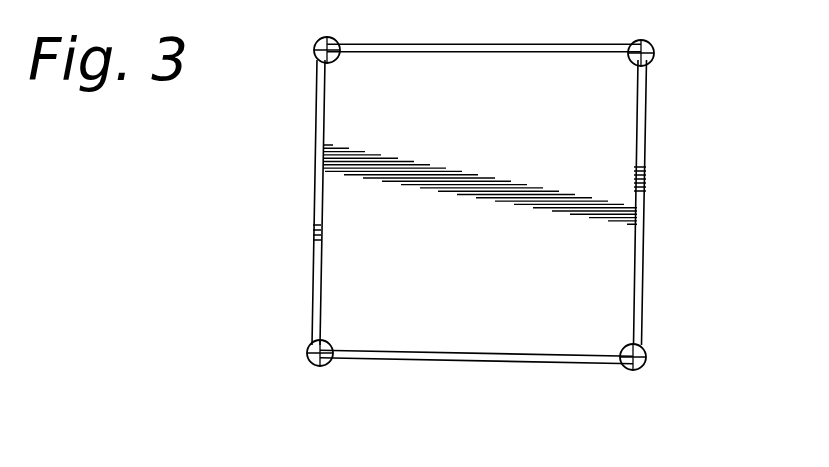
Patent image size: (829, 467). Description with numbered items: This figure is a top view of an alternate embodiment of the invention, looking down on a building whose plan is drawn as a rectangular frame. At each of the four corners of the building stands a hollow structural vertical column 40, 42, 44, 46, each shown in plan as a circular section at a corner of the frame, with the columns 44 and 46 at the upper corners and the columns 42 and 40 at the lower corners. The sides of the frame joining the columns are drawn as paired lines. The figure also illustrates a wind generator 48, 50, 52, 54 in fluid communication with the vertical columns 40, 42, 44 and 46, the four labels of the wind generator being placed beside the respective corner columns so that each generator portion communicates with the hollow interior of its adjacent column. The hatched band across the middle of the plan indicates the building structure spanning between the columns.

The hollow structural vertical column 40 is at (644, 368).
The hollow structural vertical column 42 is at (310, 362).
The hollow structural vertical column 44 is at (334, 40).
The hollow structural vertical column 46 is at (648, 43).
The wind generator 48 is at (642, 345).
The wind generator 50 is at (328, 343).
The wind generator 52 is at (338, 59).
The wind generator 54 is at (633, 64).